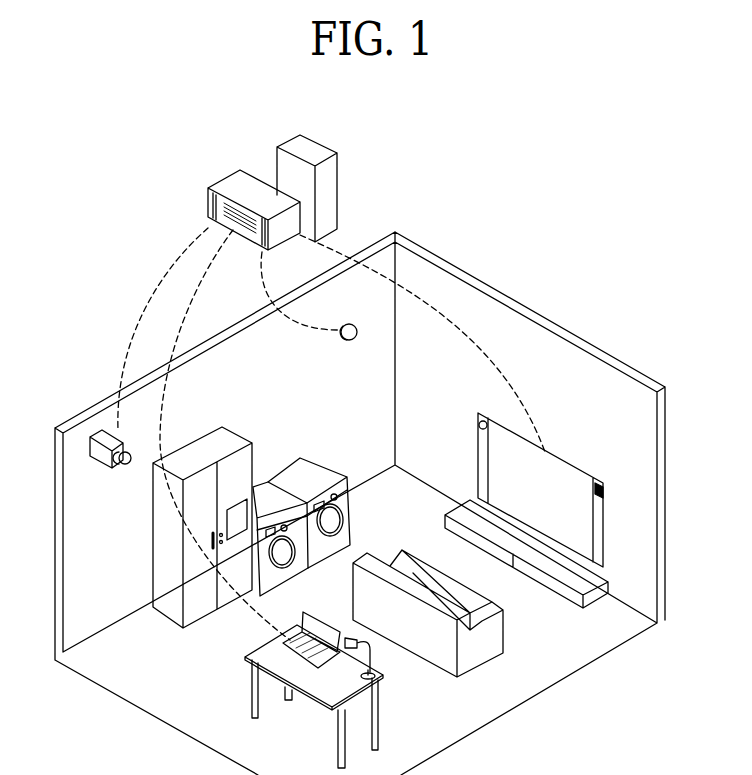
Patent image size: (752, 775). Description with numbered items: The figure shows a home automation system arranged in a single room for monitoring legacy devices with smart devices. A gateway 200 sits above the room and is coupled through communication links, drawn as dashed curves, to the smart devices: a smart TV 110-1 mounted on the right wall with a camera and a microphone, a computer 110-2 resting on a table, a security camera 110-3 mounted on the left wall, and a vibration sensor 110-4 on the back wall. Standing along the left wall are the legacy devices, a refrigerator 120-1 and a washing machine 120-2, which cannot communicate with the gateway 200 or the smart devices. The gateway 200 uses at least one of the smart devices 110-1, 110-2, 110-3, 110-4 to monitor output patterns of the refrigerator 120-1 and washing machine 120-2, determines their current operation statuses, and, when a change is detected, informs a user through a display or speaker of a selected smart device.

The gateway 200 is at (334, 150).
The security camera 110-3 is at (92, 430).
The refrigerator 120-1 is at (153, 566).
The washing machine 120-2 is at (332, 468).
The vibration sensor 110-4 is at (351, 323).
The smart TV 110-1 is at (553, 458).
The computer 110-2 is at (328, 612).